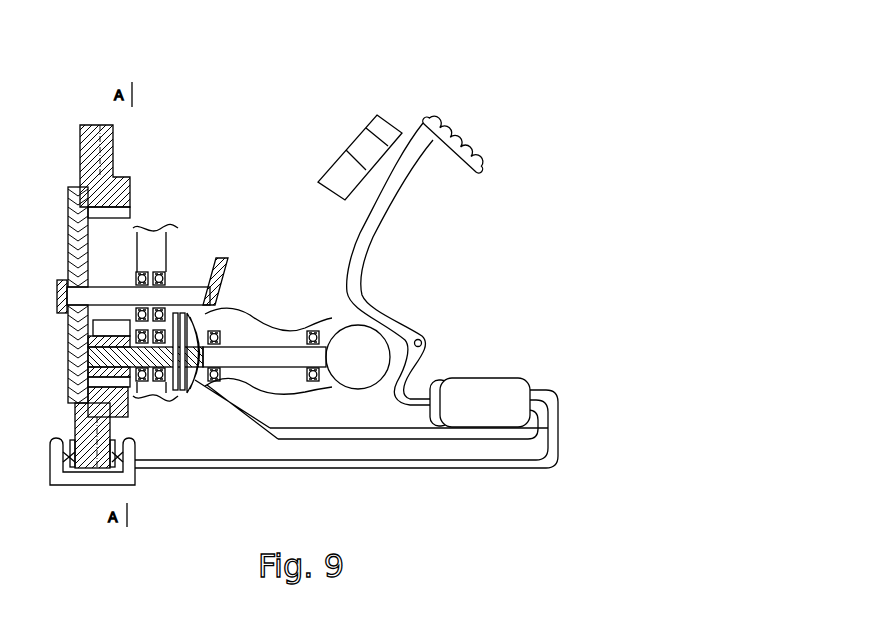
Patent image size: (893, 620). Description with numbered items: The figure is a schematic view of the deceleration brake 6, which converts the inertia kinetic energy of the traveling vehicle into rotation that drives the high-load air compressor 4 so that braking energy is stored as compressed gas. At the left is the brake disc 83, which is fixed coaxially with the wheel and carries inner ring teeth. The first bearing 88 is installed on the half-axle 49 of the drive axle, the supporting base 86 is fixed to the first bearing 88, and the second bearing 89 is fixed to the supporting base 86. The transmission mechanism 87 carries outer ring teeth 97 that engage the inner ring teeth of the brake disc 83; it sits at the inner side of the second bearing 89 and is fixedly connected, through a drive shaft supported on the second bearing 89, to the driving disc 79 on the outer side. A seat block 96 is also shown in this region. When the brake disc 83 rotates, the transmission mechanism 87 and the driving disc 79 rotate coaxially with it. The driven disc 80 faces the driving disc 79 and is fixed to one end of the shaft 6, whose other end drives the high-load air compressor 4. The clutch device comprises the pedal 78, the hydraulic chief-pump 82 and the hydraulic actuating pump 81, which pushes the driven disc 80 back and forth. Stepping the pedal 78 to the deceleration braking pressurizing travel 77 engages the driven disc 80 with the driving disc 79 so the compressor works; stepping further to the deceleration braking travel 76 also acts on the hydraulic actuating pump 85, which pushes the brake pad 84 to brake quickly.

The brake disc 83 is at (88, 143).
The bearing seat block 96 is at (108, 323).
The outer ring teeth 97 is at (158, 247).
The supporting base 86 is at (166, 235).
The first bearing 88 is at (168, 295).
The half-axle 49 is at (212, 262).
The driving disc 79 is at (176, 313).
The driven disc 80 is at (218, 330).
The hydraulic actuating pump 81 is at (205, 318).
The deceleration braking travel 76 is at (372, 128).
The deceleration braking pressurizing travel 77 is at (378, 116).
The pedal 78 is at (450, 120).
The high-load air compressor 4 is at (337, 333).
The shaft 6 is at (242, 345).
The hydraulic chief-pump 82 is at (485, 380).
The brake pad 84 is at (65, 460).
The hydraulic actuating pump 85 is at (125, 475).
The transmission mechanism 87 is at (140, 392).
The second bearing 89 is at (160, 385).